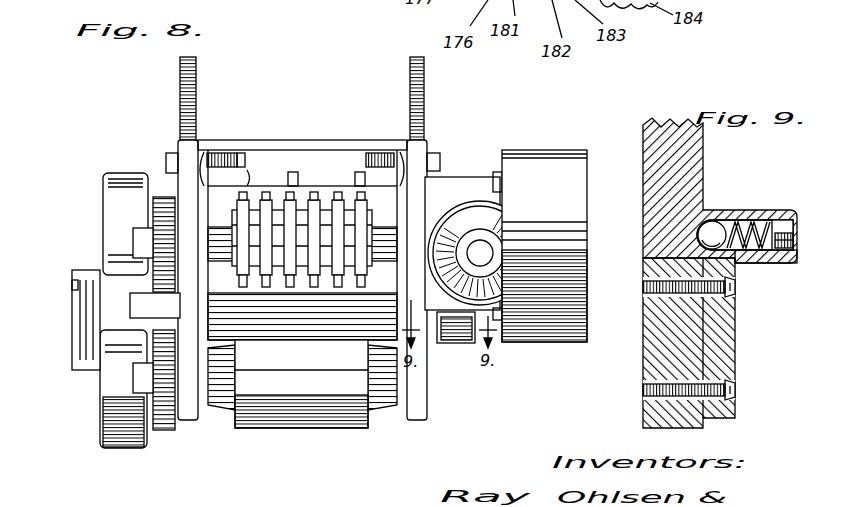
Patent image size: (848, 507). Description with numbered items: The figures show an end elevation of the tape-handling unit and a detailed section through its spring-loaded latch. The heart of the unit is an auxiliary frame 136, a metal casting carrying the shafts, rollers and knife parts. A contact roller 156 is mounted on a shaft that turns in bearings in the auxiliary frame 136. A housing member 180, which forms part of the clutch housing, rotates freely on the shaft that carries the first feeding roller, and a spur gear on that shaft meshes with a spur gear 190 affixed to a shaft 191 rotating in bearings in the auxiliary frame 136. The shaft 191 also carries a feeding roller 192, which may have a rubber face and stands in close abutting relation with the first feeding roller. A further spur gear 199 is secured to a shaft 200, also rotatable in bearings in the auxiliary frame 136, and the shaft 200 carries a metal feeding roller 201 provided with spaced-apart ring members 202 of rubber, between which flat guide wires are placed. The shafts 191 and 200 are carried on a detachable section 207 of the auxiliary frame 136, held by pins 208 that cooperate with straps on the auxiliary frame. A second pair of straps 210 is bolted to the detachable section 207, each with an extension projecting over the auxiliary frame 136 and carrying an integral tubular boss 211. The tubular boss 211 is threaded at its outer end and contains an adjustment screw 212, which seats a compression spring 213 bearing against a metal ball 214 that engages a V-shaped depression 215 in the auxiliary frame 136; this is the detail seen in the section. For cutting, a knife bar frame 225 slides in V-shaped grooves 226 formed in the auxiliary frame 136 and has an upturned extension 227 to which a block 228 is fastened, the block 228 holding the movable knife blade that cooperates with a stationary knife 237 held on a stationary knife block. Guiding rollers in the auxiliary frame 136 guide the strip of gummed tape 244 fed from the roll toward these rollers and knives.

In FIG. 8, the auxiliary frame 136 is at (156, 115).
In FIG. 9, the auxiliary frame 136 is at (652, 173).
In FIG. 8, the contact roller 156 is at (558, 162).
In FIG. 8, the housing member 180 is at (122, 357).
In FIG. 8, the spur gear 190 is at (170, 432).
In FIG. 8, the shaft 191 is at (133, 382).
In FIG. 8, the feeding roller 192 is at (308, 370).
In FIG. 8, the spur gear 199 is at (160, 213).
In FIG. 8, the shaft 200 is at (140, 245).
In FIG. 8, the feeding roller 201 is at (304, 222).
In FIG. 8, the ring members 202 is at (358, 170).
In FIG. 9, the detachable section 207 is at (688, 422).
In FIG. 8, the pins 208 is at (165, 168).
In FIG. 8, the straps 210 is at (433, 340).
In FIG. 9, the straps 210 is at (722, 346).
In FIG. 9, the tubular boss 211 is at (752, 202).
In FIG. 9, the adjustment screw 212 is at (783, 212).
In FIG. 9, the compression spring 213 is at (762, 252).
In FIG. 9, the metal ball 214 is at (714, 224).
In FIG. 9, the V-shaped depression 215 is at (704, 229).
In FIG. 8, the knife bar frame 225 is at (302, 170).
In FIG. 8, the V-shaped grooves 226 is at (176, 252).
In FIG. 8, the upturned extension 227 is at (206, 148).
In FIG. 8, the block 228 is at (245, 152).
In FIG. 8, the stationary knife 237 is at (265, 166).
In FIG. 8, the strip of gummed tape 244 is at (293, 168).